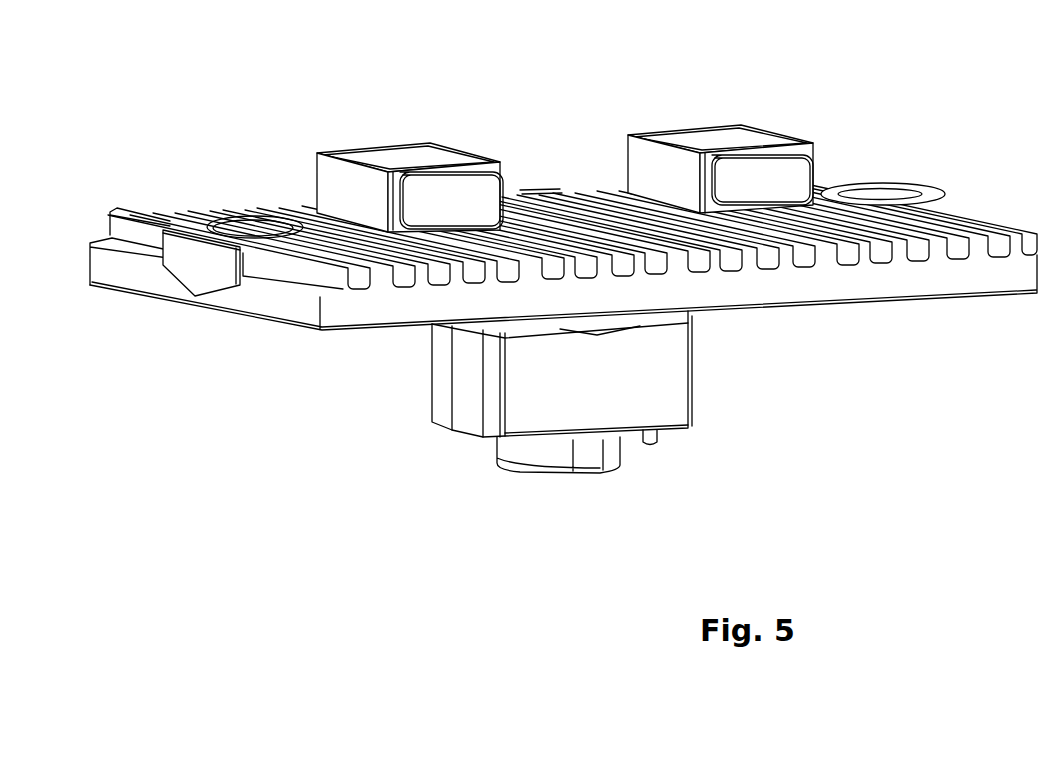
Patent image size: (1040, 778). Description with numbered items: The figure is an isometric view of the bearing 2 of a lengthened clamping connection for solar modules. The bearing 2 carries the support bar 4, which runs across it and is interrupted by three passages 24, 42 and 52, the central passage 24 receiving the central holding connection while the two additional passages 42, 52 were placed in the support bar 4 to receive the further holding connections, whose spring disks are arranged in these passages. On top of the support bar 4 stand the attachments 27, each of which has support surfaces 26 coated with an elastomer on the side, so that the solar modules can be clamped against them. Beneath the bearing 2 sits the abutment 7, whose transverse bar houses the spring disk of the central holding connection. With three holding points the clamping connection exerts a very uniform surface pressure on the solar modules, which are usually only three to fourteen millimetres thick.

The bearing 2 is at (788, 290).
The support bar 4 is at (197, 277).
The abutment 7 is at (657, 383).
The passage 24 is at (562, 212).
The support surface 26 is at (792, 177).
The attachment 27 is at (763, 130).
The passage 42 is at (253, 227).
The passage 52 is at (877, 195).